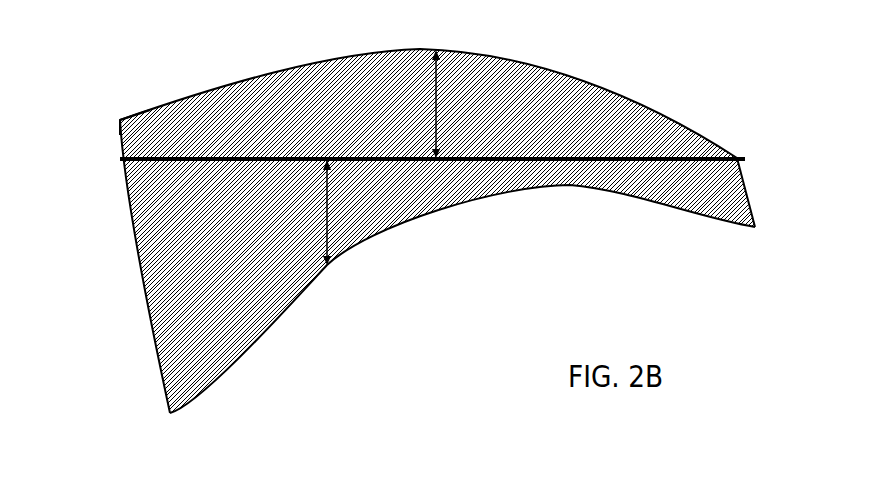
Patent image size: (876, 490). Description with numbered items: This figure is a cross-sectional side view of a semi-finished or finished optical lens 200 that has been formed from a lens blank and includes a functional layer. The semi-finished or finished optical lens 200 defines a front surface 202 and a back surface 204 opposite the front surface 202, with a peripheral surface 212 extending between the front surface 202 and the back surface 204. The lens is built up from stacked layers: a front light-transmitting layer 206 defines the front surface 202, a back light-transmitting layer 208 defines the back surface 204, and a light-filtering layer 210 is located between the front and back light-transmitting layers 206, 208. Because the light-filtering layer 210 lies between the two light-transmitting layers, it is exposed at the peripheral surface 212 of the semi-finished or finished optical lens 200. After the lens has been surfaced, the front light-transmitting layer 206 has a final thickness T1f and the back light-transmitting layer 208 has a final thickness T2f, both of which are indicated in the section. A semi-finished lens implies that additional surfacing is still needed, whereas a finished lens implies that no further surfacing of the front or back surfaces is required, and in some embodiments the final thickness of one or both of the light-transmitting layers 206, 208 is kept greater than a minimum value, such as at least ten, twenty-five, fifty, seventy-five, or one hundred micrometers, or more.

The semi-finished or finished optical lens 200 is at (195, 407).
The front surface 202 is at (615, 90).
The back surface 204 is at (570, 187).
The front light-transmitting layer 206 is at (120, 130).
The back light-transmitting layer 208 is at (145, 293).
The light-filtering layer 210 is at (122, 159).
The peripheral surface 212 is at (747, 192).
The final thickness of the front light-transmitting layer T1f is at (445, 83).
The final thickness of the back light-transmitting layer T2f is at (380, 235).